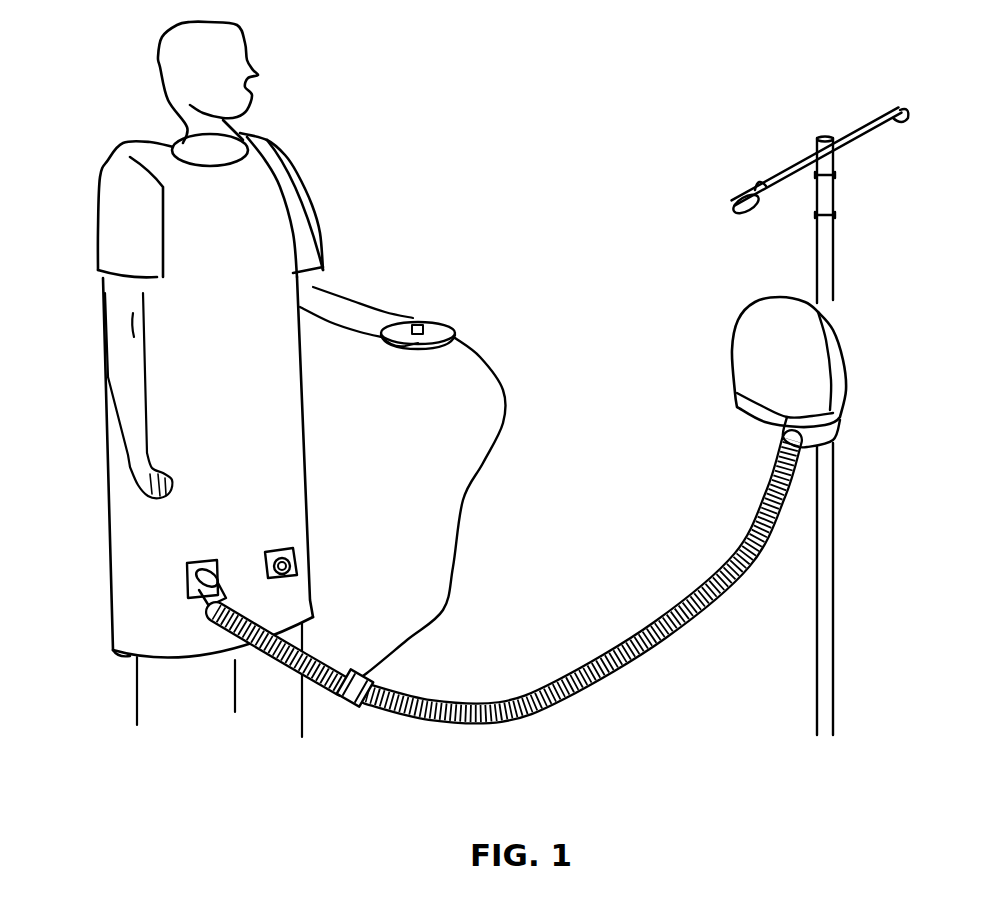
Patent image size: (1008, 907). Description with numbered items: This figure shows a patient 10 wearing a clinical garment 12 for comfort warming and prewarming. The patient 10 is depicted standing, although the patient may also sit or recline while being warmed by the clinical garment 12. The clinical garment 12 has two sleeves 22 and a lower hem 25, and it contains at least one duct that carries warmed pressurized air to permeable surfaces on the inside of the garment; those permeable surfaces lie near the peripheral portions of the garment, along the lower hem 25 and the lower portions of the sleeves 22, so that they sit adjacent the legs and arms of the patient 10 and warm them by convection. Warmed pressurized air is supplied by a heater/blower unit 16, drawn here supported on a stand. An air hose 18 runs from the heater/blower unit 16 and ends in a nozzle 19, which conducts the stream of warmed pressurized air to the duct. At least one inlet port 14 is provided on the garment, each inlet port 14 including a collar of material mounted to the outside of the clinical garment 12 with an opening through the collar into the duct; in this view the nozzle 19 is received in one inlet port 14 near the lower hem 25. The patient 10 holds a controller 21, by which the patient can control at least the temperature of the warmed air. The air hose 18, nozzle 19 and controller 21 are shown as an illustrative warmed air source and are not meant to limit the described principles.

The patient 10 is at (277, 77).
The clinical garment 12 is at (257, 190).
The sleeves 22 is at (310, 227).
The controller 21 is at (453, 340).
The inlet port 14 is at (187, 565).
The nozzle 19 is at (207, 602).
The lower hem 25 is at (120, 653).
The heater/blower unit 16 is at (760, 348).
The air hose 18 is at (765, 493).